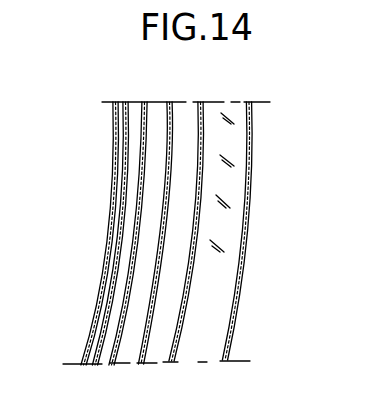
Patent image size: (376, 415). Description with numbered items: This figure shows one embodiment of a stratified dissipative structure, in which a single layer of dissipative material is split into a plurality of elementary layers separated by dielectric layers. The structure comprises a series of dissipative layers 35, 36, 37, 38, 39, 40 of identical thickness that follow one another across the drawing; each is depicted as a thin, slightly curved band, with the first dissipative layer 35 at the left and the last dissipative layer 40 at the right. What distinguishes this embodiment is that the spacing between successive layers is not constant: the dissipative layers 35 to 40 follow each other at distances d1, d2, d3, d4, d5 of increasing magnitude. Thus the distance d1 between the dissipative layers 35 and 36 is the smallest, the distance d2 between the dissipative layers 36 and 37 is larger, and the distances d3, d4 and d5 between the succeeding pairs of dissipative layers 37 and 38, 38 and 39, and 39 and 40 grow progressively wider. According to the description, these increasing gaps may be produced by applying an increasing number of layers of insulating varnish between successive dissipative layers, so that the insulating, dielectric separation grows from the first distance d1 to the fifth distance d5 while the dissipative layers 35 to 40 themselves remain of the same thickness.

The dissipative layer 35 is at (81, 363).
The dissipative layer 36 is at (98, 364).
The dissipative layer 37 is at (110, 364).
The dissipative layer 38 is at (143, 363).
The dissipative layer 39 is at (172, 361).
The dissipative layer 40 is at (228, 356).
The distance d1 is at (123, 101).
The distance d2 is at (133, 101).
The distance d3 is at (162, 101).
The distance d4 is at (190, 101).
The distance d5 is at (233, 101).